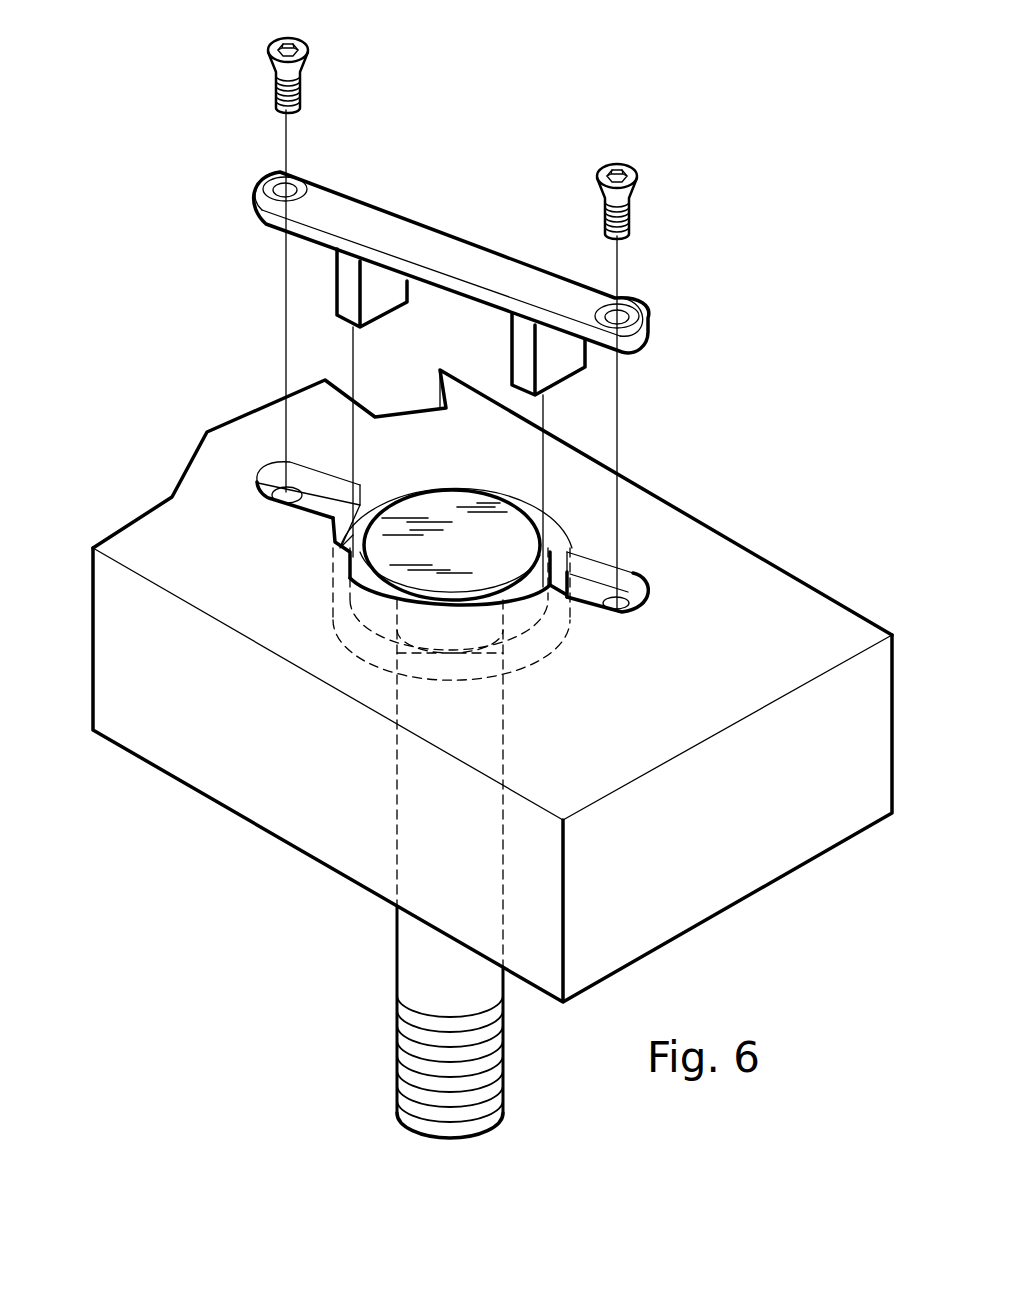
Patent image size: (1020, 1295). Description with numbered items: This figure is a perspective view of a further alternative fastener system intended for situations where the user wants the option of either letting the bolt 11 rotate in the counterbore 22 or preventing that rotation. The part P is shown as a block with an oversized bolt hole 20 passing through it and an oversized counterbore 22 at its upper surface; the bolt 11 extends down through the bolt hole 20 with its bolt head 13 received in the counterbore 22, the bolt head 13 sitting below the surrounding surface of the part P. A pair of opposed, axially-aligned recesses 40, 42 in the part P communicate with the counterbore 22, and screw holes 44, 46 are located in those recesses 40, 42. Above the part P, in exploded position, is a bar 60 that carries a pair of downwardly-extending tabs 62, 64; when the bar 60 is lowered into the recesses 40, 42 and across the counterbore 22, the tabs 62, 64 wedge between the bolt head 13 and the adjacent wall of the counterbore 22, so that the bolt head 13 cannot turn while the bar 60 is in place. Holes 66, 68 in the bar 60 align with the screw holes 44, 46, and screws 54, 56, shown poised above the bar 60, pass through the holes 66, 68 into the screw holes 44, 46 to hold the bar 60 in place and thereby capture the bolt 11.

The bolt 11 is at (413, 820).
The bolt head 13 is at (390, 545).
The oversized bolt hole 20 is at (507, 700).
The oversized counterbore 22 is at (440, 483).
The recess 40 is at (600, 573).
The recess 42 is at (327, 485).
The screw hole 44 is at (618, 597).
The screw hole 46 is at (283, 497).
The screw 54 is at (638, 172).
The screw 56 is at (306, 43).
The bar 60 is at (408, 238).
The tab 62 is at (511, 348).
The tab 64 is at (347, 287).
The hole 66 is at (627, 313).
The hole 68 is at (290, 183).
The part P is at (780, 620).